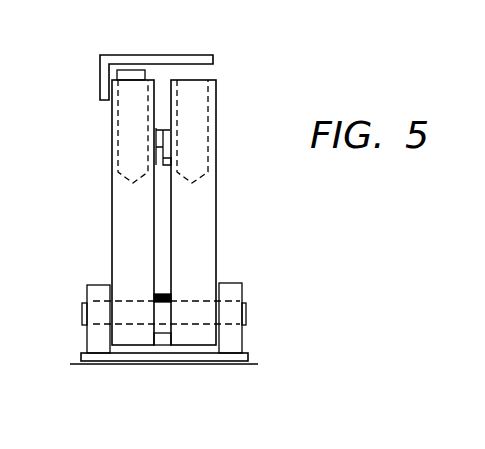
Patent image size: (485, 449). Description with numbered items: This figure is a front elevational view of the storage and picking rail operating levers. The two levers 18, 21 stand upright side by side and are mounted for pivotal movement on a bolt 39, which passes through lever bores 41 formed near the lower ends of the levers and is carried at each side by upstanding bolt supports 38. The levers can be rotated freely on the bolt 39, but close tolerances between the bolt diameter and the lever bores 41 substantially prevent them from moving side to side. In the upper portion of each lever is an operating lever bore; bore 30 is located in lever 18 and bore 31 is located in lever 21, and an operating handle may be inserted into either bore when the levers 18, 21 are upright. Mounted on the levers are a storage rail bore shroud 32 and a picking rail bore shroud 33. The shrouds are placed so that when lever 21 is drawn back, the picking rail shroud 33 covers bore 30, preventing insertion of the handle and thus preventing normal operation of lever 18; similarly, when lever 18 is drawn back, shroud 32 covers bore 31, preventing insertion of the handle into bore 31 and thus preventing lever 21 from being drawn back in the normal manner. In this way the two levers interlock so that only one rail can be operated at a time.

The lever 18 is at (122, 218).
The lever 21 is at (208, 218).
The operating lever bore 30 is at (125, 136).
The operating lever bore 31 is at (205, 143).
The storage rail bore shroud 32 is at (162, 56).
The picking rail bore shroud 33 is at (129, 72).
The bolt support 38 is at (98, 342).
The bolt 39 is at (82, 310).
The lever bore 41 is at (128, 298).